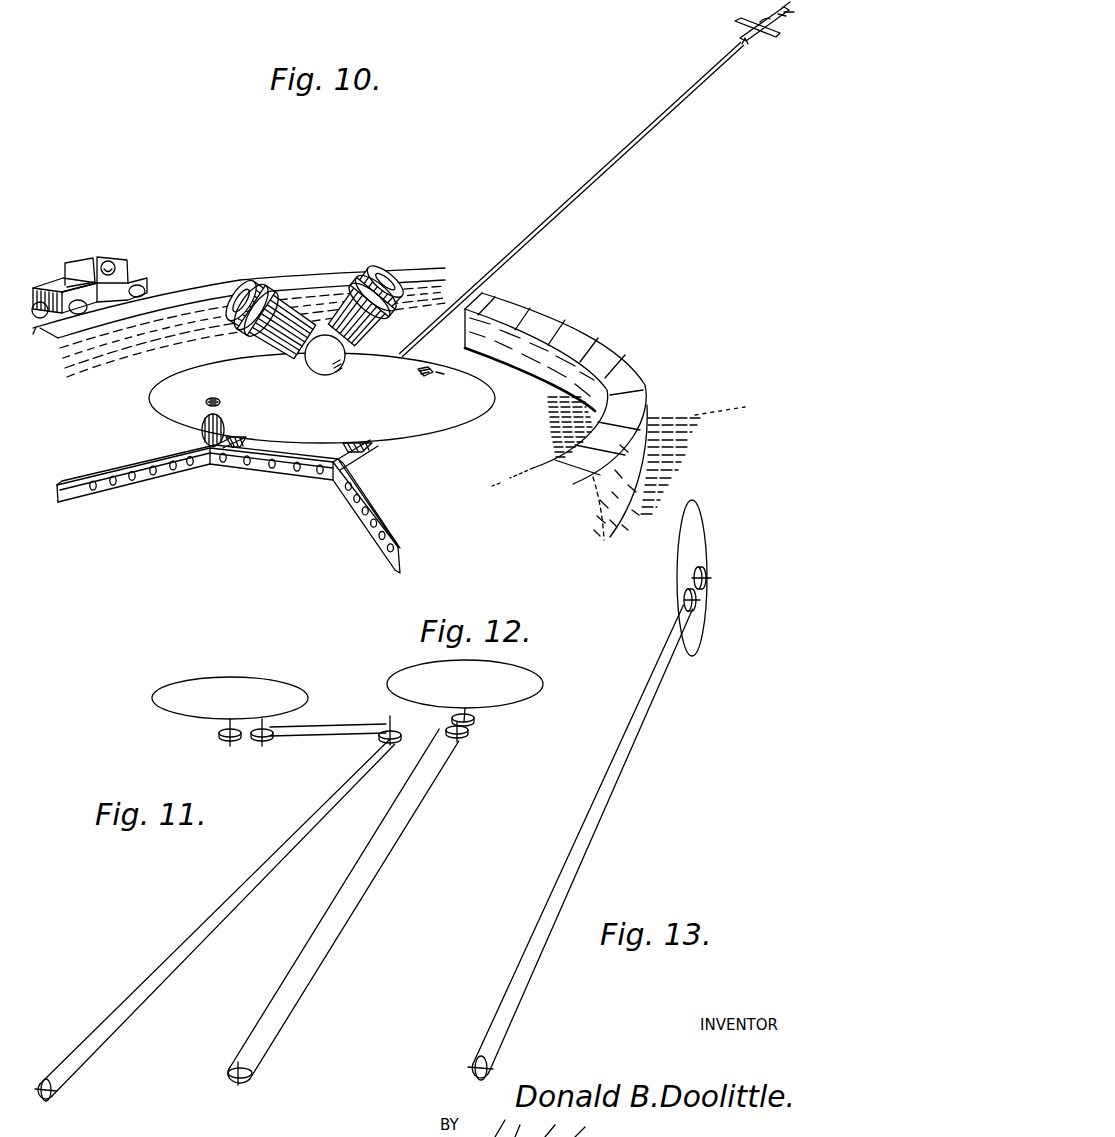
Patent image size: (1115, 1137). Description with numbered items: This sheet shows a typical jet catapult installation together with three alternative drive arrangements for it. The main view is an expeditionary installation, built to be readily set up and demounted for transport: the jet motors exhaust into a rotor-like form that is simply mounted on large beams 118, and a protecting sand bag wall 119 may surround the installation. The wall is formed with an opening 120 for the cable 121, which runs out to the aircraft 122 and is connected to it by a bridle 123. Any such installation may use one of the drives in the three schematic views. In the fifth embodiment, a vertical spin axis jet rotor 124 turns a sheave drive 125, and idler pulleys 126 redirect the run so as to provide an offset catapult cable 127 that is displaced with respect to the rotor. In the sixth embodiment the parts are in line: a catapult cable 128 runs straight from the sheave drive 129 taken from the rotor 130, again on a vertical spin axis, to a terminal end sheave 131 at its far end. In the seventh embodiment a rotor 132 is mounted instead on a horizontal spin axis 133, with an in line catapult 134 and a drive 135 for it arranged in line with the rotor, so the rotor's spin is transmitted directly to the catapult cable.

In FIG. 10, the large beams 118 is at (355, 476).
In FIG. 10, the protecting sand bag wall 119 is at (632, 389).
In FIG. 10, the opening 120 is at (426, 312).
In FIG. 10, the cable 121 is at (609, 180).
In FIG. 10, the aircraft 122 is at (750, 30).
In FIG. 10, the bridle 123 is at (741, 43).
In FIG. 11, the vertical spin axis jet rotor 124 is at (267, 690).
In FIG. 11, the sheave drive 125 is at (243, 740).
In FIG. 11, the idler pulleys 126 is at (381, 739).
In FIG. 11, the offset catapult cable 127 is at (245, 920).
In FIG. 12, the catapult cable 128 is at (405, 870).
In FIG. 12, the sheave drive 129 is at (467, 732).
In FIG. 12, the rotor 130 is at (511, 700).
In FIG. 12, the terminal end sheave 131 is at (247, 1076).
In FIG. 13, the rotor 132 is at (705, 547).
In FIG. 13, the horizontal spin axis 133 is at (710, 579).
In FIG. 13, the in line catapult 134 is at (611, 815).
In FIG. 13, the drive 135 is at (699, 600).